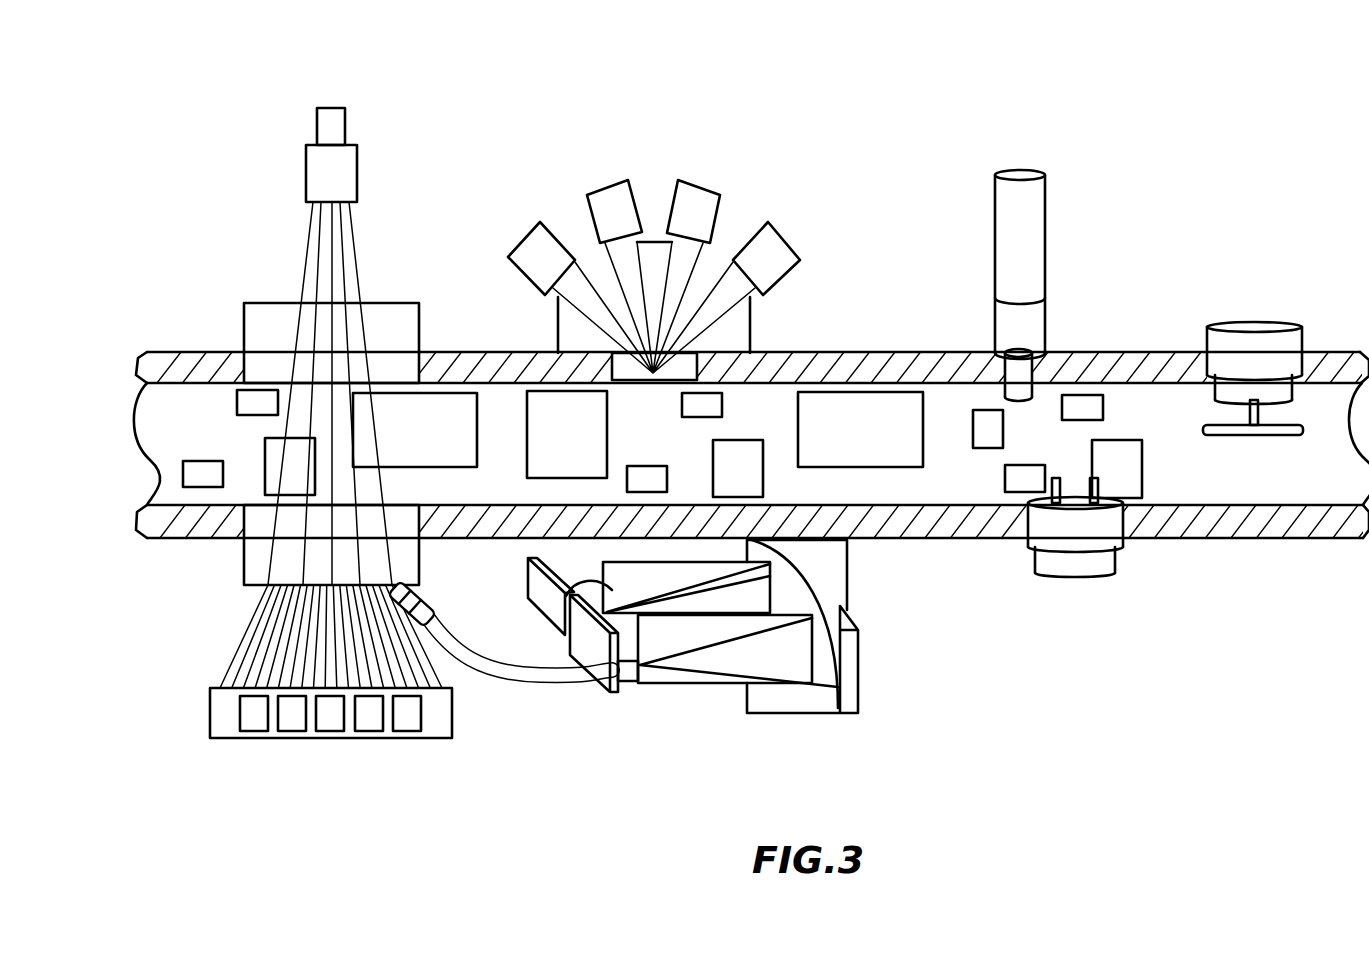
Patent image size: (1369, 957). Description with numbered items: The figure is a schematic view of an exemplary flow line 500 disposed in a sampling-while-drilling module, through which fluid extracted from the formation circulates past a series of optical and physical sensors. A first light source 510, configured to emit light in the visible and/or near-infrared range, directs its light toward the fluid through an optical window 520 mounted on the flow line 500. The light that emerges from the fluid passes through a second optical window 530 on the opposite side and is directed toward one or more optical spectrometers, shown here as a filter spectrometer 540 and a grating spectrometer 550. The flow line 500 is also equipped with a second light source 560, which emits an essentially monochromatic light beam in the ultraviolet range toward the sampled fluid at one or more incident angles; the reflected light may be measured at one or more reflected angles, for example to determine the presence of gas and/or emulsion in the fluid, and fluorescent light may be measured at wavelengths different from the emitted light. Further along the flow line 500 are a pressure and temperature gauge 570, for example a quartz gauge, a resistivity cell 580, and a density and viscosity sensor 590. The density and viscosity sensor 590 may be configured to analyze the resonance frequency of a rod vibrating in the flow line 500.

The flow line 500 is at (1248, 538).
The first light source 510 is at (327, 107).
The optical window 520 is at (257, 302).
The second optical window 530 is at (244, 560).
The filter spectrometer 540 is at (383, 755).
The grating spectrometer 550 is at (719, 699).
The second light source 560 is at (641, 167).
The pressure and temperature gauge 570 is at (1008, 170).
The resistivity cell 580 is at (1103, 576).
The density and viscosity sensor 590 is at (1222, 325).